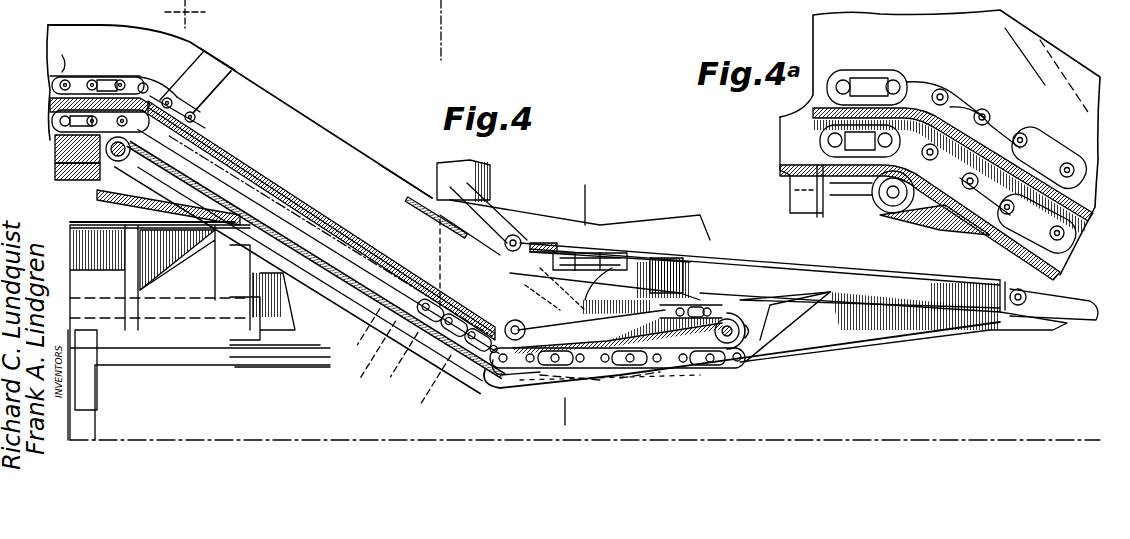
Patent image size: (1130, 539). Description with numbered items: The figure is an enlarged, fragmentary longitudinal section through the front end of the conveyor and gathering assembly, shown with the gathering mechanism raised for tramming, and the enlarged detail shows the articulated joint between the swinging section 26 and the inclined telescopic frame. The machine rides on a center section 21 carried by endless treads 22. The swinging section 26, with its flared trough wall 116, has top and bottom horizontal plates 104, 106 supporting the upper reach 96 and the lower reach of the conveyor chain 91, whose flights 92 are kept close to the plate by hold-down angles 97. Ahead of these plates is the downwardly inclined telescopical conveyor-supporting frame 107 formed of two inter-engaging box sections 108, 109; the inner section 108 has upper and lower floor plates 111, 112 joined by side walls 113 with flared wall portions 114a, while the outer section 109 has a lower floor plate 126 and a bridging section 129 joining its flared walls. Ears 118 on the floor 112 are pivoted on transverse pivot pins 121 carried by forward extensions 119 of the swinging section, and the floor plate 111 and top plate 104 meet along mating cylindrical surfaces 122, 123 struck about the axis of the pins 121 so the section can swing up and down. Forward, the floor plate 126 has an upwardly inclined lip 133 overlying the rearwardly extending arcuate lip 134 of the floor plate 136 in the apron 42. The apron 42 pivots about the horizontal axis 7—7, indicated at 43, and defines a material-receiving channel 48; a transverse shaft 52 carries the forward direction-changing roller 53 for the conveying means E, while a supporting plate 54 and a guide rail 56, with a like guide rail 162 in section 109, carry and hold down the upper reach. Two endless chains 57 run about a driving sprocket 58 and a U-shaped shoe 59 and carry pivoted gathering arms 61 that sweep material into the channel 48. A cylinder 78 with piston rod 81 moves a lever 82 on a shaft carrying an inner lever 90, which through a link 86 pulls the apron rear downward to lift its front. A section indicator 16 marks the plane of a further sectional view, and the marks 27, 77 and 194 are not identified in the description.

In FIG. 4, the horizontal axis 7 is at (592, 197).
In FIG. 4, the section line 16- 16 is at (178, 9).
In FIG. 4, the center section 21 is at (102, 393).
In FIG. 4, the endless treads 22 is at (538, 0).
In FIG. 4, the swinging section 26 is at (60, 108).
In FIG. 4, the center line 27 is at (444, 57).
In FIG. 4, the apron 42 is at (895, 345).
In FIG. 4, the pivot axis 43 is at (565, 245).
In FIG. 4, the material-receiving channel 48 is at (835, 310).
In FIG. 4, the transverse shaft 52 is at (745, 338).
In FIG. 4, the forward direction-changing roller 53 is at (810, 347).
In FIG. 4, the transverse horizontal supporting plate 54 is at (660, 258).
In FIG. 4, the guide rail 56 is at (616, 311).
In FIG. 4, the endless chains 57 is at (520, 237).
In FIG. 4, the driving sprocket 58 is at (610, 243).
In FIG. 4, the U-shaped shoe 59 is at (767, 280).
In FIG. 4, the gathering arms 61 is at (480, 222).
In FIG. 4, the guide 77 is at (628, 385).
In FIG. 4, the cylinder 78 is at (490, 173).
In FIG. 4, the piston rod 81 is at (445, 230).
In FIG. 4, the lever 82 is at (394, 347).
In FIG. 4, the link 86 is at (447, 380).
In FIG. 4, the inner lever 90 is at (455, 410).
In FIG. 4, the conveyor chain 91 is at (745, 330).
In FIG. 4A, the conveyor chain 91 is at (1026, 120).
In FIG. 4A, the flights 92 is at (1045, 152).
In FIG. 4, the upper reach 96 is at (70, 54).
In FIG. 4, the hold-down angles 97 is at (222, 147).
In FIG. 4, the top horizontal plate 104 is at (90, 80).
In FIG. 4A, the top horizontal plate 104 is at (860, 80).
In FIG. 4, the bottom horizontal plate 106 is at (55, 143).
In FIG. 4, the conveyor-supporting frame 107 is at (259, 58).
In FIG. 4, the box section 108 is at (216, 62).
In FIG. 4A, the box section 108 is at (1095, 48).
In FIG. 4, the box section 109 is at (403, 180).
In FIG. 4A, the box section 109 is at (1053, 270).
In FIG. 4, the upper floor plate 111 is at (262, 181).
In FIG. 4A, the upper floor plate 111 is at (1005, 118).
In FIG. 4, the lower floor plate 112 is at (288, 206).
In FIG. 4A, the lower floor plate 112 is at (960, 235).
In FIG. 4, the side walls 113 is at (312, 248).
In FIG. 4, the outwardly extending side wall portion 114a is at (252, 110).
In FIG. 4, the trough-like side wall 116 is at (120, 51).
In FIG. 4, the ear 118 is at (150, 172).
In FIG. 4A, the ear 118 is at (925, 215).
In FIG. 4, the forward extensions 119 is at (58, 158).
In FIG. 4A, the forward extensions 119 is at (838, 200).
In FIG. 4, the transverse pivot pins 121 is at (115, 160).
In FIG. 4A, the transverse pivot pins 121 is at (895, 210).
In FIG. 4, the mating cylindrical surface 122 is at (185, 108).
In FIG. 4A, the mating cylindrical surface 122 is at (980, 100).
In FIG. 4, the mating cylindrical surface 123 is at (165, 98).
In FIG. 4A, the mating cylindrical surface 123 is at (955, 85).
In FIG. 4, the lower floor plate 126 is at (325, 275).
In FIG. 4, the bridging section 129 is at (288, 100).
In FIG. 4, the upwardly inclined lip 133 is at (500, 388).
In FIG. 4, the arcuate lip 134 is at (520, 388).
In FIG. 4, the floor plate 136 is at (608, 388).
In FIG. 4, the guide rail 162 is at (392, 222).
In FIG. 4, the frame part 194 is at (267, 6).
In FIG. 4A, the conveying means E is at (900, 68).